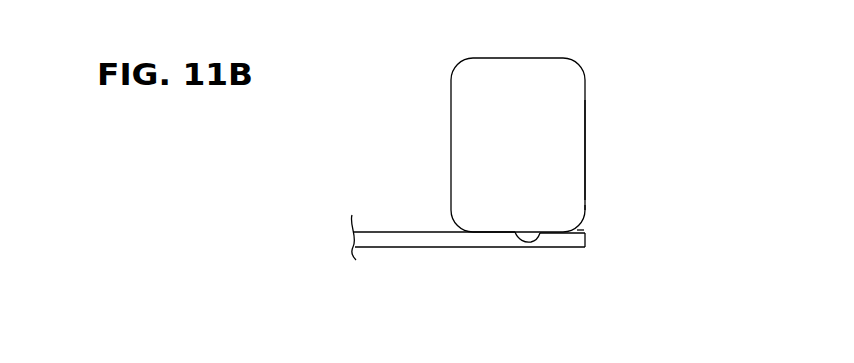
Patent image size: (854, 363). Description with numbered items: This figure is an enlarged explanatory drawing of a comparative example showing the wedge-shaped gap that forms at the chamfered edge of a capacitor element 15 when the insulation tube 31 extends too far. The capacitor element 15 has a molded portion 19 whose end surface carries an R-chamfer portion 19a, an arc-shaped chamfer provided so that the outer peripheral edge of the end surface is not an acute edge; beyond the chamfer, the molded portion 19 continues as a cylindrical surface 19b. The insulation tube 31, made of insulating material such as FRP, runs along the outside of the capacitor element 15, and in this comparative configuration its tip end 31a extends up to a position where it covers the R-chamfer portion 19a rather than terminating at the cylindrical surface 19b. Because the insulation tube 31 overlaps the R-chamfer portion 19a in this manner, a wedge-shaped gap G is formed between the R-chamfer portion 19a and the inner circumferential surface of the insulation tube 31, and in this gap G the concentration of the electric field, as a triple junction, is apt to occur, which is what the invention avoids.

The capacitor element 15 is at (558, 81).
The molded portion 19 is at (560, 142).
The R-chamfer portion 19a is at (577, 228).
The cylindrical surface 19b is at (515, 232).
The insulation tube 31 is at (390, 240).
The tip end 31a is at (577, 240).
The wedge-shaped gap G is at (582, 229).